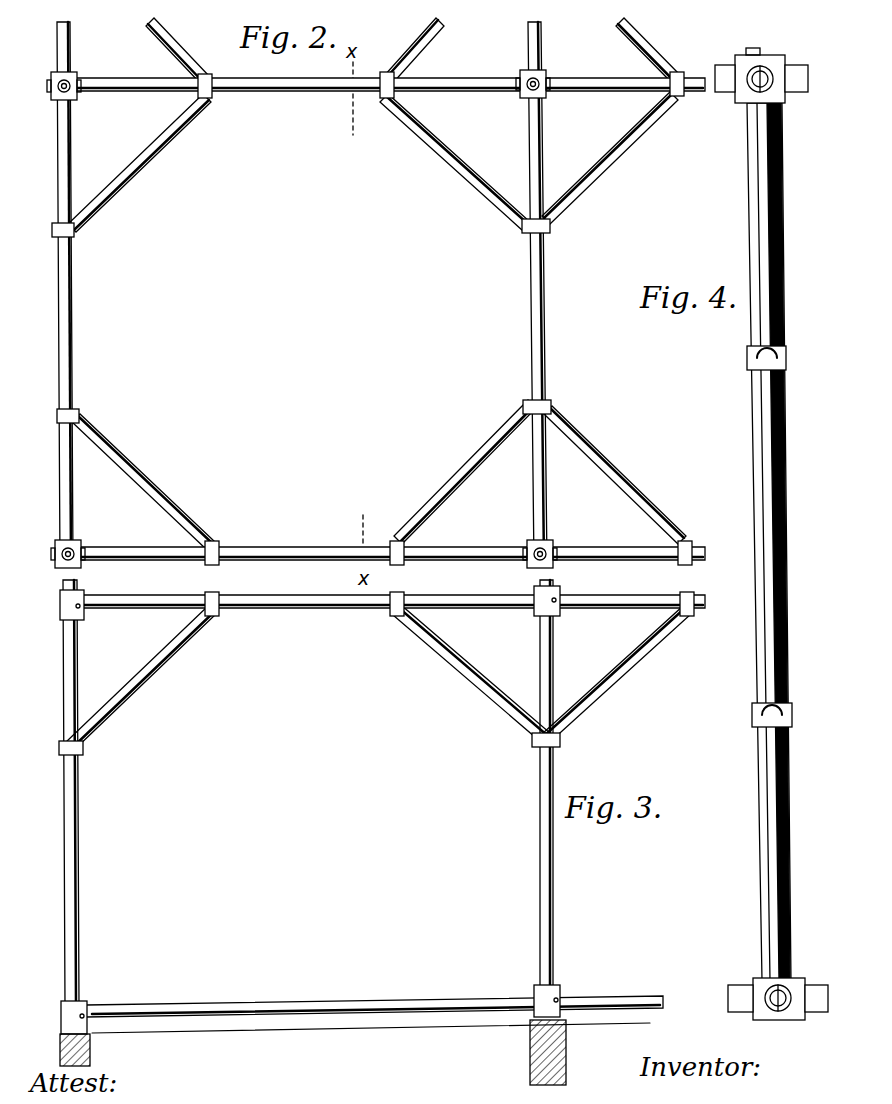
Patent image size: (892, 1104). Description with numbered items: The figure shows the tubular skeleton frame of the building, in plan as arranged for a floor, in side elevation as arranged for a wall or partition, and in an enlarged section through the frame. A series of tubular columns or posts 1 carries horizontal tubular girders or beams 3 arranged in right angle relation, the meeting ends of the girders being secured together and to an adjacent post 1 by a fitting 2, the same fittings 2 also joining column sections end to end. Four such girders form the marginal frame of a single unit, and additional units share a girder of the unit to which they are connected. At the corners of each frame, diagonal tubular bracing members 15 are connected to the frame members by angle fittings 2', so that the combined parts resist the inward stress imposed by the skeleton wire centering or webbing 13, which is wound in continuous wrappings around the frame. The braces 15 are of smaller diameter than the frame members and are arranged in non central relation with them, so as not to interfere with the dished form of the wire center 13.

In FIG. 2, the tubular column or post 1 is at (52, 90).
In FIG. 3, the tubular column or post 1 is at (78, 828).
In FIG. 4, the tubular column or post 1 is at (788, 100).
In FIG. 2, the fitting 2 is at (302, 308).
In FIG. 3, the fitting 2 is at (325, 835).
In FIG. 4, the fitting 2 is at (771, 550).
In FIG. 2, the angle fitting 2' is at (372, 318).
In FIG. 3, the angle fitting 2' is at (362, 686).
In FIG. 4, the angle fitting 2' is at (757, 712).
In FIG. 2, the horizontal tubular girder or beam 3 is at (71, 130).
In FIG. 3, the horizontal tubular girder or beam 3 is at (306, 609).
In FIG. 4, the horizontal tubular girder or beam 3 is at (786, 420).
In FIG. 2, the tubular bracing member 15 is at (377, 283).
In FIG. 3, the tubular bracing member 15 is at (378, 677).
In FIG. 4, the tubular bracing member 15 is at (781, 192).
In FIG. 4, the skeleton wire centering or webbing 13 is at (753, 238).